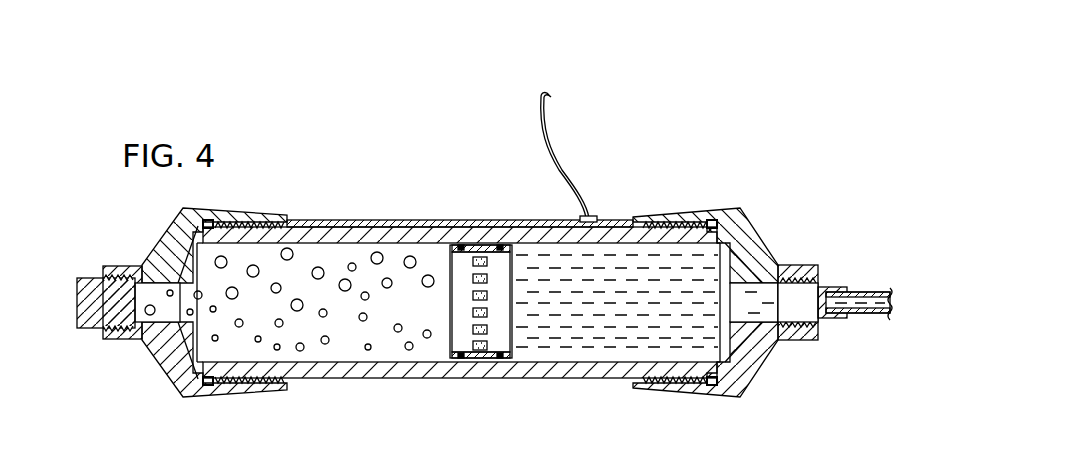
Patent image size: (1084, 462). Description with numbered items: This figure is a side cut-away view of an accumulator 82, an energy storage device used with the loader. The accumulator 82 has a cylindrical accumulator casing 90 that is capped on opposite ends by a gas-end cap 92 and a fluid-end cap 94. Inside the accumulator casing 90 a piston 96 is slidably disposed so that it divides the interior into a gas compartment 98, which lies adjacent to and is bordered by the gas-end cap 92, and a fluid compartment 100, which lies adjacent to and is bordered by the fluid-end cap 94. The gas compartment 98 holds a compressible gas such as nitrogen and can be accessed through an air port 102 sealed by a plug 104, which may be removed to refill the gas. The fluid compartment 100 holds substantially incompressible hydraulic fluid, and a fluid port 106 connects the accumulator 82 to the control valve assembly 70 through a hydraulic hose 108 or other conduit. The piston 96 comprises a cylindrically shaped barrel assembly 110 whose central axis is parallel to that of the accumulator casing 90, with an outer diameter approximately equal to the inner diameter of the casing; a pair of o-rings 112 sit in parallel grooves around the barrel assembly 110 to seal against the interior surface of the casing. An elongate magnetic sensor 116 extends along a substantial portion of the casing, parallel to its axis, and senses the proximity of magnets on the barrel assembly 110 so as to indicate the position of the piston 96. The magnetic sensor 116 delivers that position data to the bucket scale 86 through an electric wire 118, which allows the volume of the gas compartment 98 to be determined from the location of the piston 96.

The accumulator 82 is at (605, 197).
The accumulator casing 90 is at (323, 380).
The gas-end cap 92 is at (242, 214).
The fluid-end cap 94 is at (723, 210).
The piston 96 is at (513, 335).
The gas compartment 98 is at (388, 350).
The fluid compartment 100 is at (700, 335).
The air port 102 is at (150, 300).
The plug 104 is at (87, 278).
The fluid port 106 is at (778, 300).
The hydraulic hose 108 is at (863, 290).
The barrel assembly 110 is at (503, 273).
The o-rings 112 is at (498, 245).
The magnetic sensor 116 is at (403, 222).
The electric wire 118 is at (552, 148).
The bucket scale 86 is at (546, 56).
The control valve assembly 70 is at (923, 309).